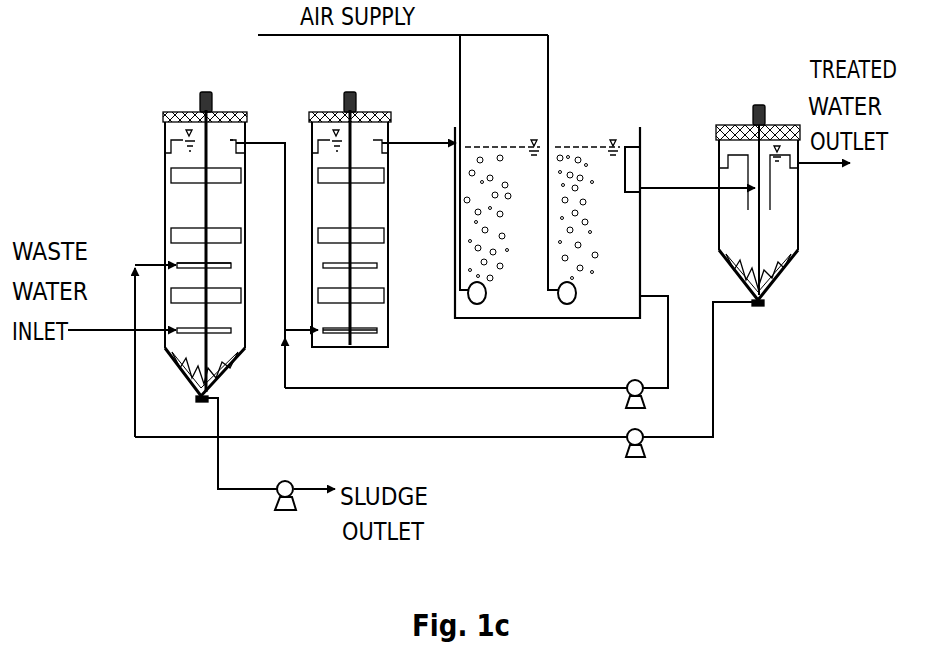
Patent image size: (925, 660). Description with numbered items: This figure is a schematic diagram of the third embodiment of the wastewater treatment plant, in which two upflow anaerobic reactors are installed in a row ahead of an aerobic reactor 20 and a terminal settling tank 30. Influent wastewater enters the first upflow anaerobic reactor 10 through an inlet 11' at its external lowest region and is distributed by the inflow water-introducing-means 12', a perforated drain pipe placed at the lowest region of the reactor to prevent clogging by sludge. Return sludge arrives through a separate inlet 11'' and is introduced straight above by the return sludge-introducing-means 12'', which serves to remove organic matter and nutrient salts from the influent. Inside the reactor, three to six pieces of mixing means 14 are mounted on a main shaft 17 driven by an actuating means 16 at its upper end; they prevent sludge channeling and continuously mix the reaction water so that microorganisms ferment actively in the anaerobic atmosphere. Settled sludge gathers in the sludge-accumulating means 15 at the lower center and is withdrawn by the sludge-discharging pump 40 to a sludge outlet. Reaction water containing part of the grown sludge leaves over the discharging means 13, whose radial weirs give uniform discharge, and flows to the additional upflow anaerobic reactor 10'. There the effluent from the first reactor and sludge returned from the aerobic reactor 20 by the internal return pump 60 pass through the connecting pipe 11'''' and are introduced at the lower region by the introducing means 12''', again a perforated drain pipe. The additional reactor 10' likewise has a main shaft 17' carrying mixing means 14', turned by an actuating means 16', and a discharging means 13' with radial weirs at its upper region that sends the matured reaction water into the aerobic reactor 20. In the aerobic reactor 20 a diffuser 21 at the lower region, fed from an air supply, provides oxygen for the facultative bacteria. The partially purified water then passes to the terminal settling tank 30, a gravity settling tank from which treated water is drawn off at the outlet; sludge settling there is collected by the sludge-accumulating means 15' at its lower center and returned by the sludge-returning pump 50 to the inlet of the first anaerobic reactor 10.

The upflow anaerobic reactor 10 is at (182, 230).
The additional upflow anaerobic reactor 10' is at (330, 224).
The inlet 11' is at (105, 364).
The inlet 11'' is at (133, 248).
The transfer pipe to second tank 11'''' is at (277, 265).
The inflow water-introducing-means 12' is at (138, 348).
The return sludge-introducing-means 12'' is at (171, 231).
The introducing means 12''' is at (385, 279).
The discharging means 13 is at (176, 112).
The discharging means 13' is at (386, 90).
The mixing means 14 is at (238, 185).
The mixing means 14' is at (385, 190).
The sludge-accumulating means 15 is at (221, 349).
The sludge-accumulating means 15' is at (792, 289).
The actuating means 16 is at (172, 72).
The actuating means 16' is at (316, 74).
The main shaft 17 is at (204, 213).
The main shaft 17' is at (365, 190).
The aerobic reactor 20 is at (640, 127).
The diffuser 21 is at (560, 305).
The terminal settling tank 30 is at (800, 225).
The sludge-discharging pump 40 is at (292, 480).
The sludge-returning pump 50 is at (633, 455).
The internal return pump 60 is at (630, 380).